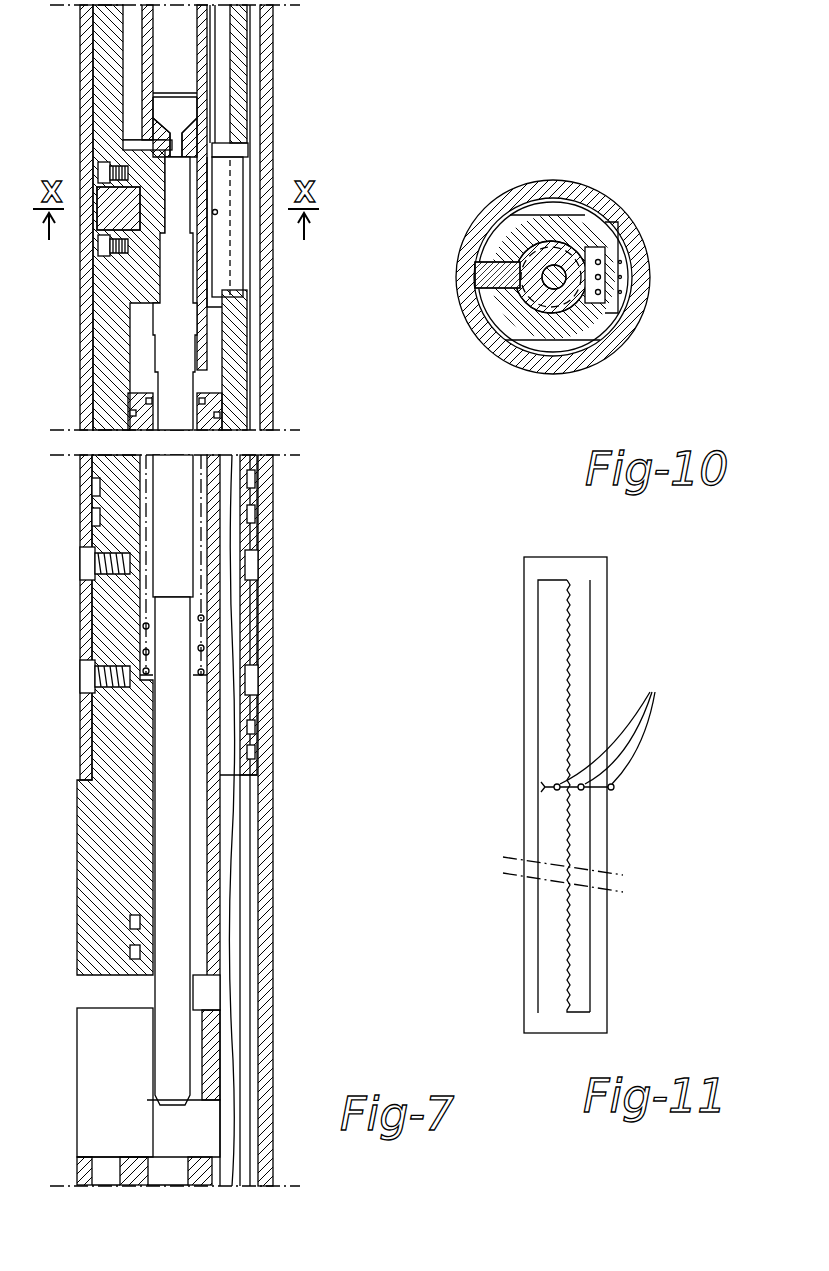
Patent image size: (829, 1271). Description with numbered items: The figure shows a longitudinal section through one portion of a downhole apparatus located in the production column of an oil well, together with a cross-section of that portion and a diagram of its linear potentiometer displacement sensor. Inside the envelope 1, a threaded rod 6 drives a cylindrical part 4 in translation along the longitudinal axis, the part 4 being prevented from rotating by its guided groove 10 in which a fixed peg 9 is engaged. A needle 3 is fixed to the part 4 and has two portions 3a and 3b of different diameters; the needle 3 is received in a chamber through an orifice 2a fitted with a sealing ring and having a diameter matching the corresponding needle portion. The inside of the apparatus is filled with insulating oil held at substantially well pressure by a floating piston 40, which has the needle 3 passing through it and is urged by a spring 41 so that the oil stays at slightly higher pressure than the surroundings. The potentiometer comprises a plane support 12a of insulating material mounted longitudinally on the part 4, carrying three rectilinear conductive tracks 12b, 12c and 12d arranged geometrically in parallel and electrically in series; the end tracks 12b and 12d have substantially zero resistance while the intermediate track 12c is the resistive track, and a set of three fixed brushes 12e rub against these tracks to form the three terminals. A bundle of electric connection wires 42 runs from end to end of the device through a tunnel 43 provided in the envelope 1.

In FIG. 7, the envelope 1 is at (72, 332).
In FIG. 10, the envelope 1 is at (508, 178).
In FIG. 7, the orifice 2a is at (175, 1172).
In FIG. 7, the needle 3 is at (212, 388).
In FIG. 7, the needle portion 3a is at (170, 506).
In FIG. 7, the needle portion 3b is at (165, 843).
In FIG. 7, the cylindrical part 4 is at (203, 72).
In FIG. 10, the cylindrical part 4 is at (558, 320).
In FIG. 7, the threaded rod 6 is at (182, 35).
In FIG. 7, the fixed peg 9 is at (110, 212).
In FIG. 10, the fixed peg 9 is at (502, 293).
In FIG. 7, the guided groove 10 is at (130, 82).
In FIG. 10, the guided groove 10 is at (507, 262).
In FIG. 7, the plane support 12a is at (215, 108).
In FIG. 10, the plane support 12a is at (602, 302).
In FIG. 11, the plane support 12a is at (543, 1033).
In FIG. 11, the end track 12b is at (540, 714).
In FIG. 11, the intermediate track 12c is at (565, 668).
In FIG. 11, the end track 12d is at (593, 620).
In FIG. 7, the fixed brushes 12e is at (215, 210).
In FIG. 10, the fixed brushes 12e is at (604, 258).
In FIG. 11, the fixed brushes 12e is at (630, 793).
In FIG. 7, the floating piston 40 is at (215, 408).
In FIG. 7, the spring 41 is at (205, 618).
In FIG. 7, the bundle of electric connection wires 42 is at (235, 825).
In FIG. 7, the tunnel 43 is at (240, 1120).